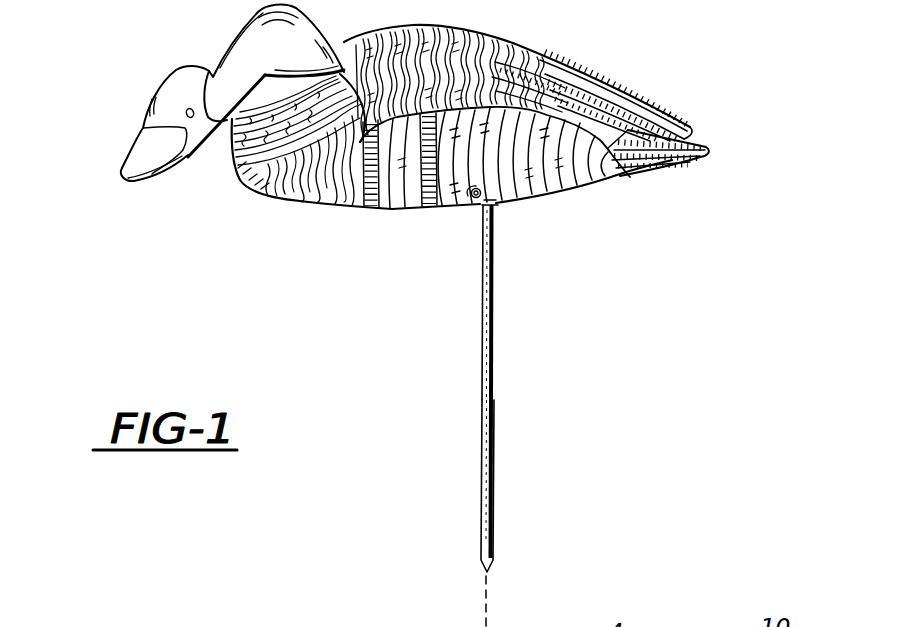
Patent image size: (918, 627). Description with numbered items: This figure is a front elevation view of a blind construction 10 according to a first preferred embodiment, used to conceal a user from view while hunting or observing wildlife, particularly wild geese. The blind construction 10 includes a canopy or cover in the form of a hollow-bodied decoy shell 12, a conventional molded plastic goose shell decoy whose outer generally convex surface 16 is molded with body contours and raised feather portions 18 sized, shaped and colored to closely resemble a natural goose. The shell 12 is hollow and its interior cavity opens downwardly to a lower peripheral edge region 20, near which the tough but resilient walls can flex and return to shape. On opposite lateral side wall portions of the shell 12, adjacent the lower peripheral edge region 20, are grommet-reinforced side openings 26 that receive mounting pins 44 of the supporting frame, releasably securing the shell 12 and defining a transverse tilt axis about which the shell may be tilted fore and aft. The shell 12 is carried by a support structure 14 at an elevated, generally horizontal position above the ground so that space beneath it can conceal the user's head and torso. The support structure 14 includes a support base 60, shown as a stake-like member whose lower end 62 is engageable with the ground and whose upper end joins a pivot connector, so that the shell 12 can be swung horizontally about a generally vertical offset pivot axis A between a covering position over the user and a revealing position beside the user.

The blind construction 10 is at (698, 100).
The decoy shell 12 is at (237, 187).
The support structure 14 is at (512, 318).
The outer generally convex surface 16 is at (287, 192).
The raised feather portions 18 is at (463, 33).
The lower peripheral edge region 20 is at (360, 208).
The side openings 26 is at (465, 200).
The mounting pins 44 is at (499, 203).
The support base 60 is at (508, 353).
The lower end 62 is at (484, 493).
The pivot axis A is at (485, 613).